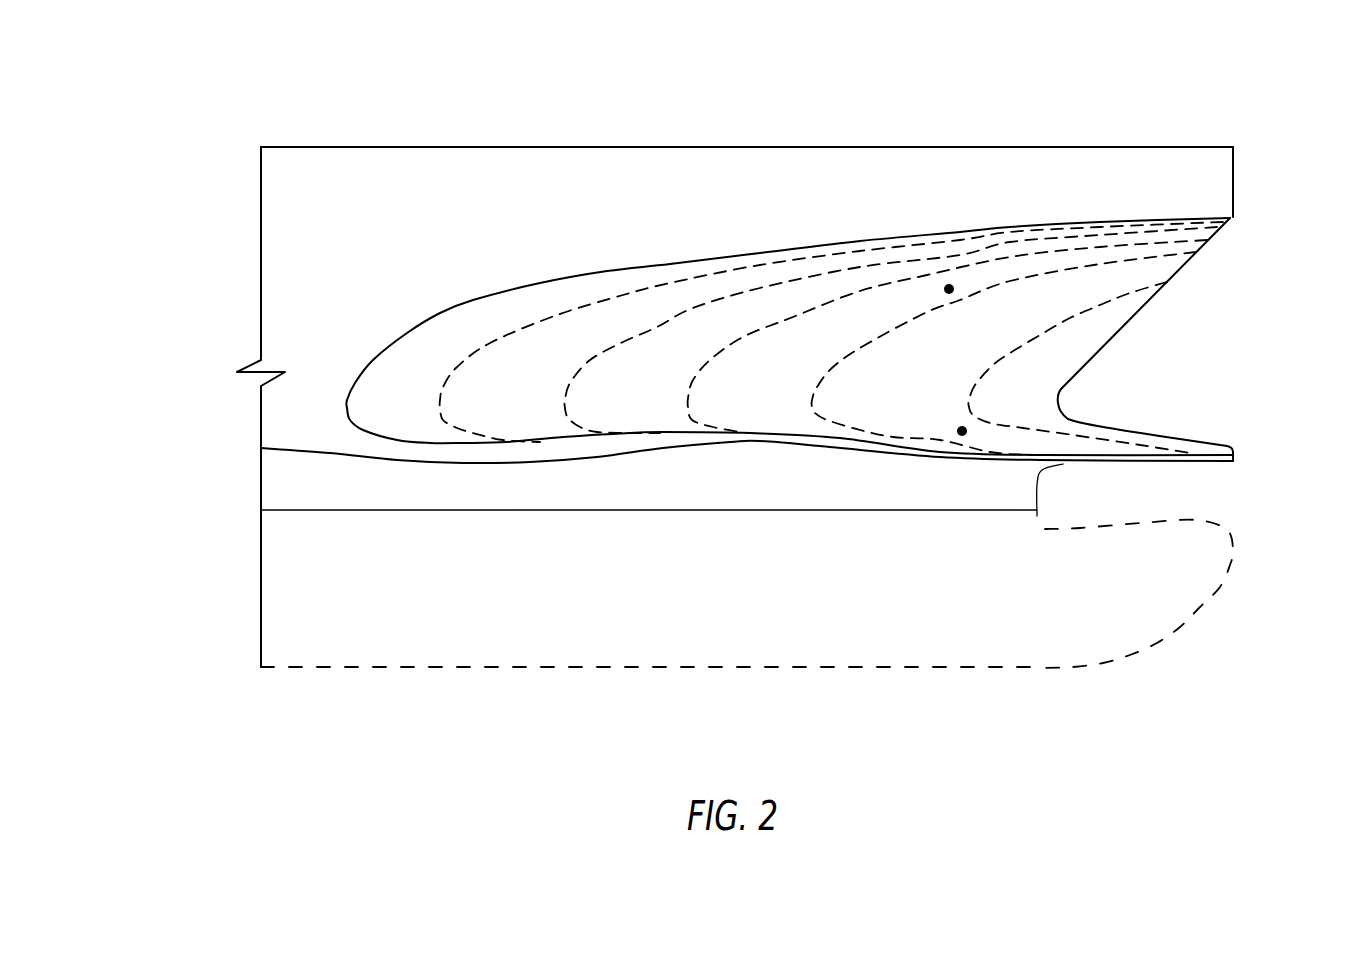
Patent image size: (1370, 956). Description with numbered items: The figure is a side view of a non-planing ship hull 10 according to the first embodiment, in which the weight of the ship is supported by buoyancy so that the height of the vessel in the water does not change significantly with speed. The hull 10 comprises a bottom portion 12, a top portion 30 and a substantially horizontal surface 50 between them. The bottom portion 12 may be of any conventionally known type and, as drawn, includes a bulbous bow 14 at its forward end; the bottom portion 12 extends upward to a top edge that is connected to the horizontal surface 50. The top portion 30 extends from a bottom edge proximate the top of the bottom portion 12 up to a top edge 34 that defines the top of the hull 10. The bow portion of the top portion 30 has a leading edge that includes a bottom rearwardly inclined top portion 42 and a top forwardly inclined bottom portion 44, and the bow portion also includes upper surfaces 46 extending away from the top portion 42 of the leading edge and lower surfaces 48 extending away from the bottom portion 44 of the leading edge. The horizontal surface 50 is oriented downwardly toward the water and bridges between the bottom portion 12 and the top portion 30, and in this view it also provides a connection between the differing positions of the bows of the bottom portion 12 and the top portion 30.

The ship hull 10 is at (758, 110).
The bottom portion 12 is at (1003, 632).
The bulbous bow 14 is at (1225, 586).
The top portion 30 is at (312, 263).
The top edge 34 is at (410, 147).
The bottom rearwardly inclined top portion 42 is at (1165, 436).
The top forwardly inclined bottom portion 44 is at (1184, 264).
The upper surfaces 46 is at (949, 289).
The lower surfaces 48 is at (962, 431).
The horizontal surface 50 is at (462, 465).